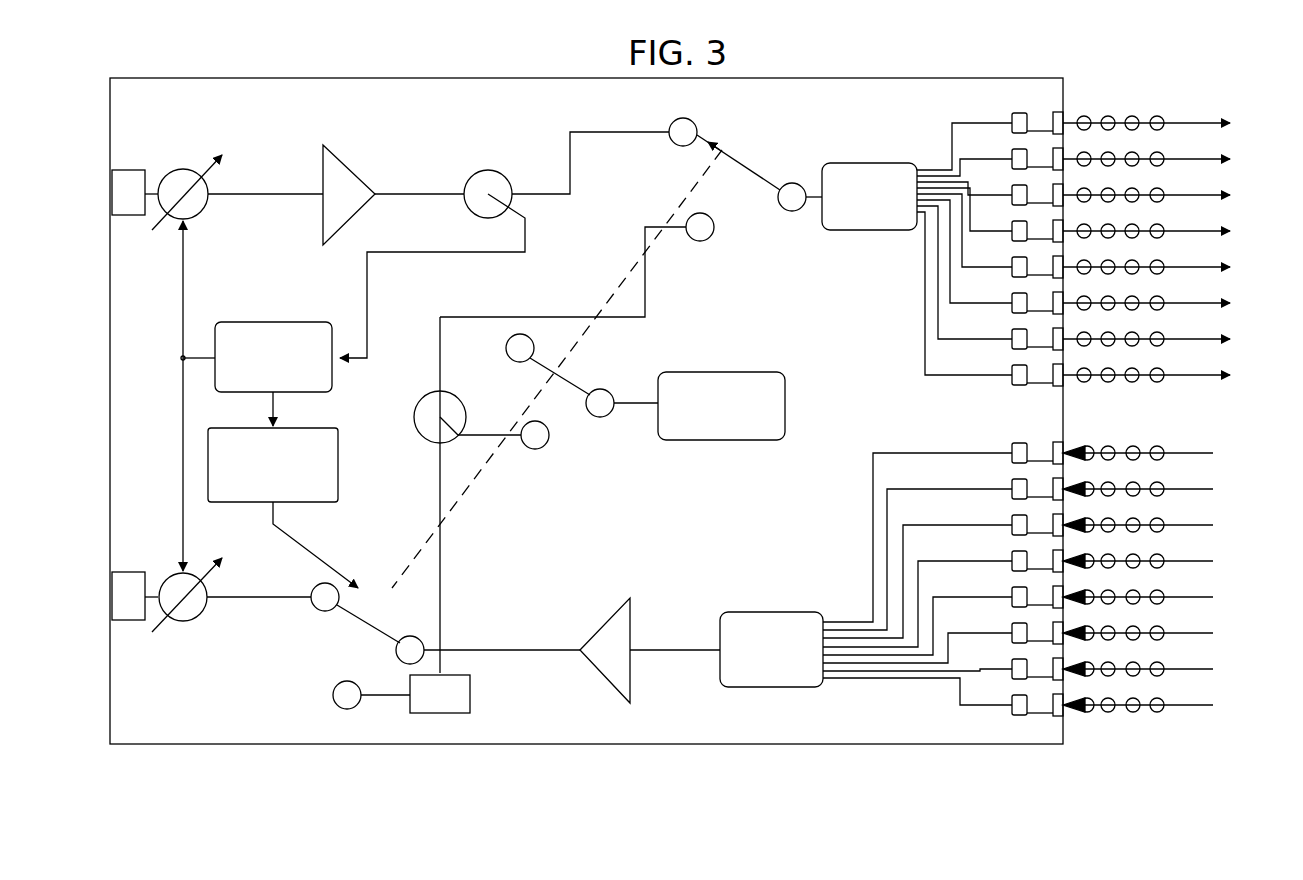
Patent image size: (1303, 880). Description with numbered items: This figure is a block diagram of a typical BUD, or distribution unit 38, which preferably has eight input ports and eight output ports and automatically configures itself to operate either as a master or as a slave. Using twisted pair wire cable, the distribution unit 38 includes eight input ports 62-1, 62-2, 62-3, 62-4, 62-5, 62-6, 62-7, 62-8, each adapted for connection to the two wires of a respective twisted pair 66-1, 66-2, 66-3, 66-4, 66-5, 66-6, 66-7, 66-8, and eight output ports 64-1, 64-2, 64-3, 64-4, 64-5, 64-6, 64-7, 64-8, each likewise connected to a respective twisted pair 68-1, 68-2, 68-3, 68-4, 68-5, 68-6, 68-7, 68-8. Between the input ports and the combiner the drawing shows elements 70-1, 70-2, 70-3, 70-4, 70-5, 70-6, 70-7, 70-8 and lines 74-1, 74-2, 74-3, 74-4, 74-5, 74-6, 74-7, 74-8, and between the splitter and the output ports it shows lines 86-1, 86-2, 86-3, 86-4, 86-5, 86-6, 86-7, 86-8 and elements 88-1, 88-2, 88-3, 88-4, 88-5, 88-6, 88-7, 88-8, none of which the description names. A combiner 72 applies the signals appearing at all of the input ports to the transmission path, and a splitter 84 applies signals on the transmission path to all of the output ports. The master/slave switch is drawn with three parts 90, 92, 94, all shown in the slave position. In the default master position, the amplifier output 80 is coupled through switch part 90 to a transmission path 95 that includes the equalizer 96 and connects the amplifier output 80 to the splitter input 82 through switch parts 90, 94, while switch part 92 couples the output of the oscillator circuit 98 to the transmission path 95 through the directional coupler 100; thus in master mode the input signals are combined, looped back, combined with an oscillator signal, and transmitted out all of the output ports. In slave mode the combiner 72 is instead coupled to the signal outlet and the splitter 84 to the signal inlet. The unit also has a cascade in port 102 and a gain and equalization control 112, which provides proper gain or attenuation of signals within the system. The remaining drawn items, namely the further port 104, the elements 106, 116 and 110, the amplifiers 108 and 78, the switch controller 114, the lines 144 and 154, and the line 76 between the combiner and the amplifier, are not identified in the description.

The distribution unit 38 is at (285, 78).
The cascade in port 102 is at (128, 218).
The second input port 104 is at (138, 571).
The variable attenuator 106 is at (181, 166).
The amplifier 108 is at (352, 163).
The directional coupler 110 is at (488, 169).
The gain and equalization control 112 is at (268, 320).
The switch controller 114 is at (316, 430).
The second variable attenuator 116 is at (183, 626).
The AGC control line 144 is at (200, 306).
The coupled signal line 154 is at (437, 258).
The directional coupler 100 is at (424, 404).
The switch part 92 is at (507, 388).
The switch part 94 is at (686, 164).
The transmission path 95 is at (607, 280).
The oscillator circuit 98 is at (720, 442).
The splitter input 82 is at (798, 183).
The splitter 84 is at (840, 232).
The amplifier 78 is at (596, 606).
The combiner output line 76 is at (672, 646).
The amplifier output 80 is at (514, 646).
The combiner 72 is at (762, 611).
The switch part 90 is at (336, 630).
The equalizer 96 is at (470, 695).
The combiner input line 74-1 is at (944, 680).
The combiner input line 74-2 is at (928, 673).
The combiner input line 74-3 is at (850, 655).
The combiner input line 74-4 is at (933, 605).
The combiner input line 74-5 is at (918, 560).
The combiner input line 74-6 is at (903, 530).
The combiner input line 74-7 is at (887, 500).
The combiner input line 74-8 is at (873, 472).
The filter B 70-1 is at (1010, 704).
The filter B 70-2 is at (1010, 664).
The filter B 70-3 is at (1010, 628).
The filter B 70-4 is at (1010, 592).
The filter B 70-5 is at (1010, 556).
The filter B 70-6 is at (1010, 520).
The filter B 70-7 is at (1010, 484).
The filter B 70-8 is at (1010, 448).
The input port 62-1 is at (1066, 702).
The input port 62-2 is at (1066, 666).
The input port 62-3 is at (1066, 630).
The input port 62-4 is at (1066, 594).
The input port 62-5 is at (1066, 558).
The input port 62-6 is at (1066, 522).
The input port 62-7 is at (1066, 486).
The input port 62-8 is at (1066, 450).
The twisted pair 66-1 is at (1182, 697).
The twisted pair 66-2 is at (1182, 661).
The twisted pair 66-3 is at (1182, 625).
The twisted pair 66-4 is at (1182, 589).
The twisted pair 66-5 is at (1182, 553).
The twisted pair 66-6 is at (1182, 517).
The twisted pair 66-7 is at (1182, 481).
The twisted pair 66-8 is at (1182, 445).
The splitter output line 86-1 is at (925, 366).
The splitter output line 86-2 is at (938, 320).
The splitter output line 86-3 is at (950, 280).
The splitter output line 86-4 is at (962, 240).
The splitter output line 86-5 is at (970, 215).
The splitter output line 86-6 is at (968, 188).
The splitter output line 86-7 is at (960, 160).
The splitter output line 86-8 is at (952, 125).
The filter B 88-1 is at (1010, 380).
The filter B 88-2 is at (1010, 346).
The filter B 88-3 is at (1010, 313).
The filter B 88-4 is at (1010, 279).
The filter B 88-5 is at (1010, 243).
The filter B 88-6 is at (1010, 190).
The filter B 88-7 is at (1010, 154).
The filter B 88-8 is at (1010, 116).
The output port 64-1 is at (1066, 373).
The output port 64-2 is at (1066, 337).
The output port 64-3 is at (1066, 301).
The output port 64-4 is at (1066, 265).
The output port 64-5 is at (1066, 229).
The output port 64-6 is at (1066, 193).
The output port 64-7 is at (1066, 157).
The output port 64-8 is at (1066, 121).
The twisted pair 68-1 is at (1182, 367).
The twisted pair 68-2 is at (1182, 331).
The twisted pair 68-3 is at (1182, 295).
The twisted pair 68-4 is at (1182, 259).
The twisted pair 68-5 is at (1182, 223).
The twisted pair 68-6 is at (1182, 187).
The twisted pair 68-7 is at (1182, 151).
The twisted pair 68-8 is at (1182, 115).